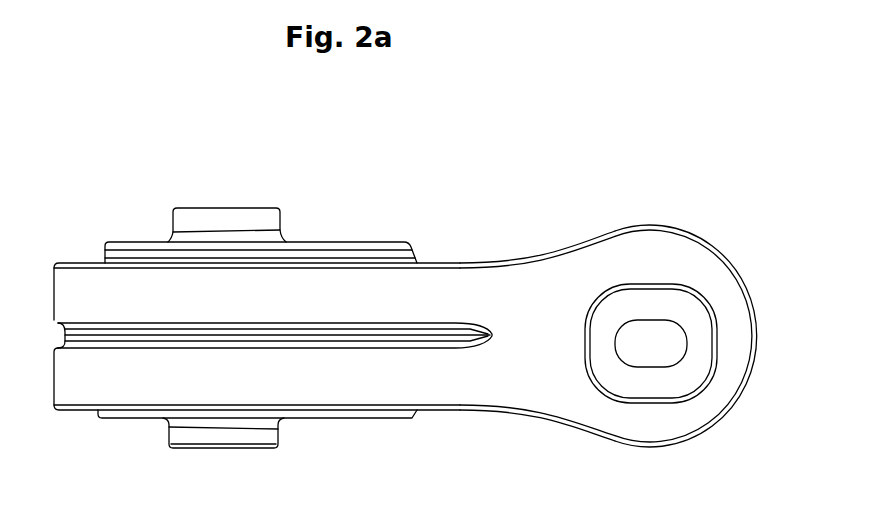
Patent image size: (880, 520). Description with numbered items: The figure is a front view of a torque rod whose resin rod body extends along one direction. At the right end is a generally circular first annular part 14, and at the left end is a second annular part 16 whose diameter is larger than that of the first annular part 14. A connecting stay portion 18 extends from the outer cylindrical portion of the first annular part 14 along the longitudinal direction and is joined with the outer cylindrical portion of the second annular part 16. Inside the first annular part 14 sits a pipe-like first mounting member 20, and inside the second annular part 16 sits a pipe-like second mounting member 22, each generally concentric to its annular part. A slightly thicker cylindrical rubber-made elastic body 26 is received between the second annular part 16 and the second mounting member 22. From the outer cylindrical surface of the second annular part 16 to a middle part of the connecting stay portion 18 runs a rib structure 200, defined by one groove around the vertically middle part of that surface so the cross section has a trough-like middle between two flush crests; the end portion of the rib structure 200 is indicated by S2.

The first annular part 14 is at (697, 236).
The second annular part 16 is at (318, 285).
The connecting stay portion 18 is at (475, 295).
The first mounting member 20 is at (693, 321).
The second mounting member 22 is at (230, 207).
The rubber-made elastic body 26 is at (377, 241).
The rib structure 200 is at (128, 333).
The end portion of the rib structure S2 is at (497, 344).